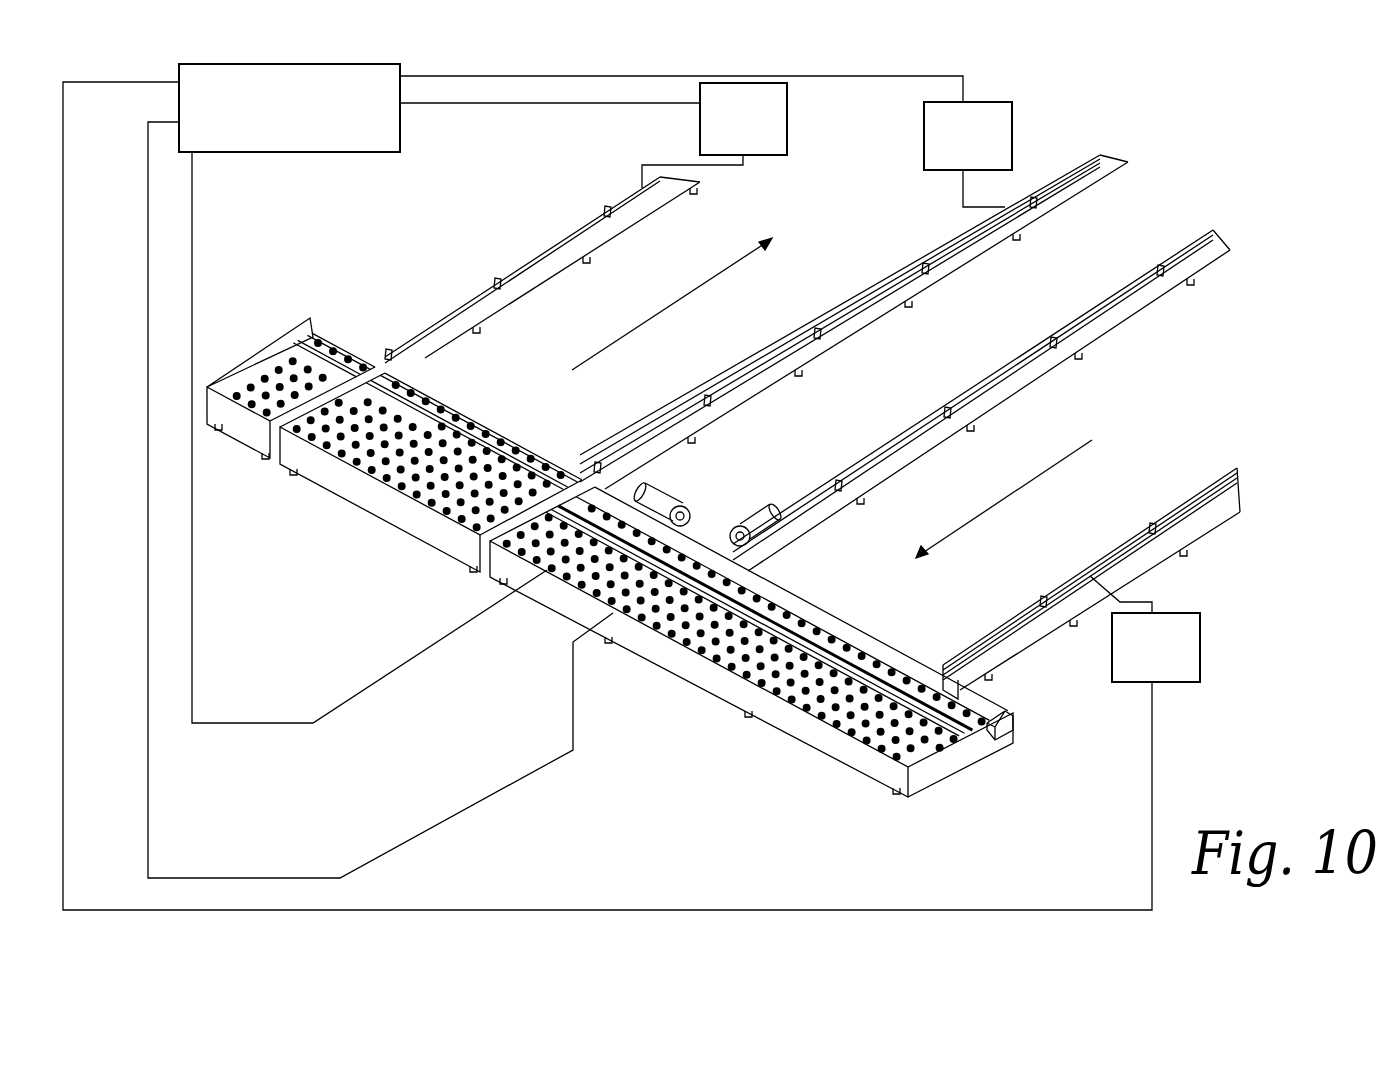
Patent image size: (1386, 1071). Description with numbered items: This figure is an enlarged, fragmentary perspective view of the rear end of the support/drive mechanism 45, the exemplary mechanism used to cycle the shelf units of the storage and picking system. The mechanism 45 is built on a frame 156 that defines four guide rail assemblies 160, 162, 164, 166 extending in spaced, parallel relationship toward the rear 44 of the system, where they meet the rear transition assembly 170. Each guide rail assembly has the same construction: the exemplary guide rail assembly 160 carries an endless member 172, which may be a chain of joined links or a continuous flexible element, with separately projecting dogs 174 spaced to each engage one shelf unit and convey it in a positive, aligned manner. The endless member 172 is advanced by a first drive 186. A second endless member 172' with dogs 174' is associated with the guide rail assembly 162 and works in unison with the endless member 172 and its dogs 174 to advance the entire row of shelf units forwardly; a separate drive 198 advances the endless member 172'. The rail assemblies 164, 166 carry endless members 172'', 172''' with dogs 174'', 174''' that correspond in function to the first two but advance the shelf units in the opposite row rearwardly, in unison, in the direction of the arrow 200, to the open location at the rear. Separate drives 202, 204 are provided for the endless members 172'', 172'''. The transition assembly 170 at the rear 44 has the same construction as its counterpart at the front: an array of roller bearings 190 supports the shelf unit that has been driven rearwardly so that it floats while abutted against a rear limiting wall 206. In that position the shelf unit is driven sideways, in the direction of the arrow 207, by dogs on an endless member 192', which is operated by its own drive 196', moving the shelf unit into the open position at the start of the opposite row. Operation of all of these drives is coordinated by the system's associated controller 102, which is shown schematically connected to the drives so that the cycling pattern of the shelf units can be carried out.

The controller 102 is at (247, 136).
The first drive 186 is at (762, 142).
The drive 198 is at (987, 161).
The drive 204 is at (1175, 674).
The transition assembly 170 is at (422, 492).
The arrow 207 is at (448, 500).
The rear limiting wall 206 is at (663, 650).
The endless member 192' is at (785, 613).
The roller bearings 190 is at (770, 690).
The support/drive mechanism 45 is at (972, 765).
The rear 44 is at (535, 622).
The guide rail assembly 160 is at (558, 271).
The guide rail assembly 162 is at (681, 412).
The guide rail assembly 164 is at (808, 497).
The guide rail assembly 166 is at (976, 642).
The endless member 172 is at (522, 270).
The second endless member 172' is at (840, 318).
The endless member 172'' is at (973, 395).
The endless member 172''' is at (1090, 574).
The dogs 174 is at (492, 248).
The dogs 174' is at (815, 324).
The dogs 174'' is at (999, 378).
The dogs 174''' is at (1110, 529).
The drive 196' is at (682, 489).
The drive 202 is at (762, 520).
The arrow 200 is at (1018, 488).
The frame 156 is at (986, 670).